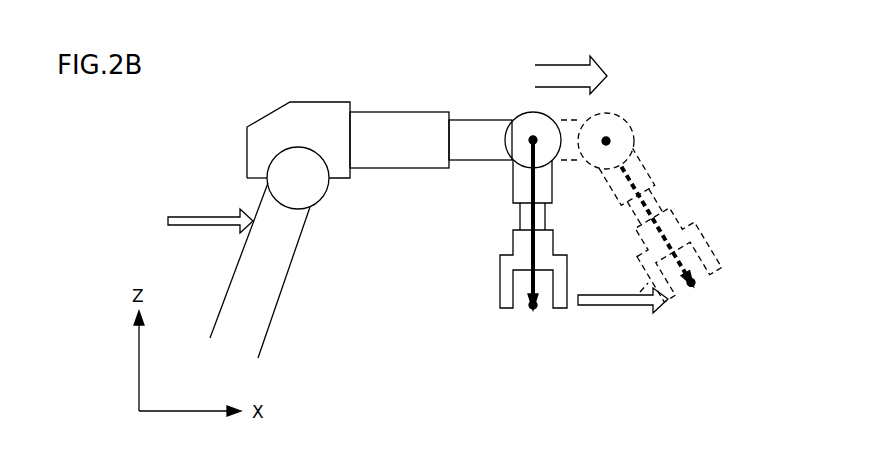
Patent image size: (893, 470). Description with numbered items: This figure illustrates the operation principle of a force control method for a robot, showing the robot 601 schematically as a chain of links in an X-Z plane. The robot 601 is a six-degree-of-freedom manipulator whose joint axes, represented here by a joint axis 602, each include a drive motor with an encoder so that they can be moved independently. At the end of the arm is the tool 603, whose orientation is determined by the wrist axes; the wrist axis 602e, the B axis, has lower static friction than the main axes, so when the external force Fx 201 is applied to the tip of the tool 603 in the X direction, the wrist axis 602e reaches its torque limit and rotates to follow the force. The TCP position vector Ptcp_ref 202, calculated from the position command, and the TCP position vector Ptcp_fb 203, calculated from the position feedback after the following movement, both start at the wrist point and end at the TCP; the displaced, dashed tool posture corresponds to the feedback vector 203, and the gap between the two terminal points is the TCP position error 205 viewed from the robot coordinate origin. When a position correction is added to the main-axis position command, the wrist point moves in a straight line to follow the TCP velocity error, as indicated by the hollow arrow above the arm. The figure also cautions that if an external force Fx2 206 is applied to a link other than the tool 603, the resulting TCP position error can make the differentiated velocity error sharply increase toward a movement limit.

The robot 601 is at (258, 138).
The joint axis 602 is at (533, 140).
The wrist axis (B axis) 602e is at (633, 135).
The TCP position vector Ptcp_ref 202 is at (512, 255).
The tool (hand) 603 is at (502, 310).
The TCP position vector Ptcp_fb 203 is at (700, 240).
The TCP position error 205 is at (633, 288).
The external force Fx 201 is at (620, 310).
The external force Fx2 206 is at (193, 223).